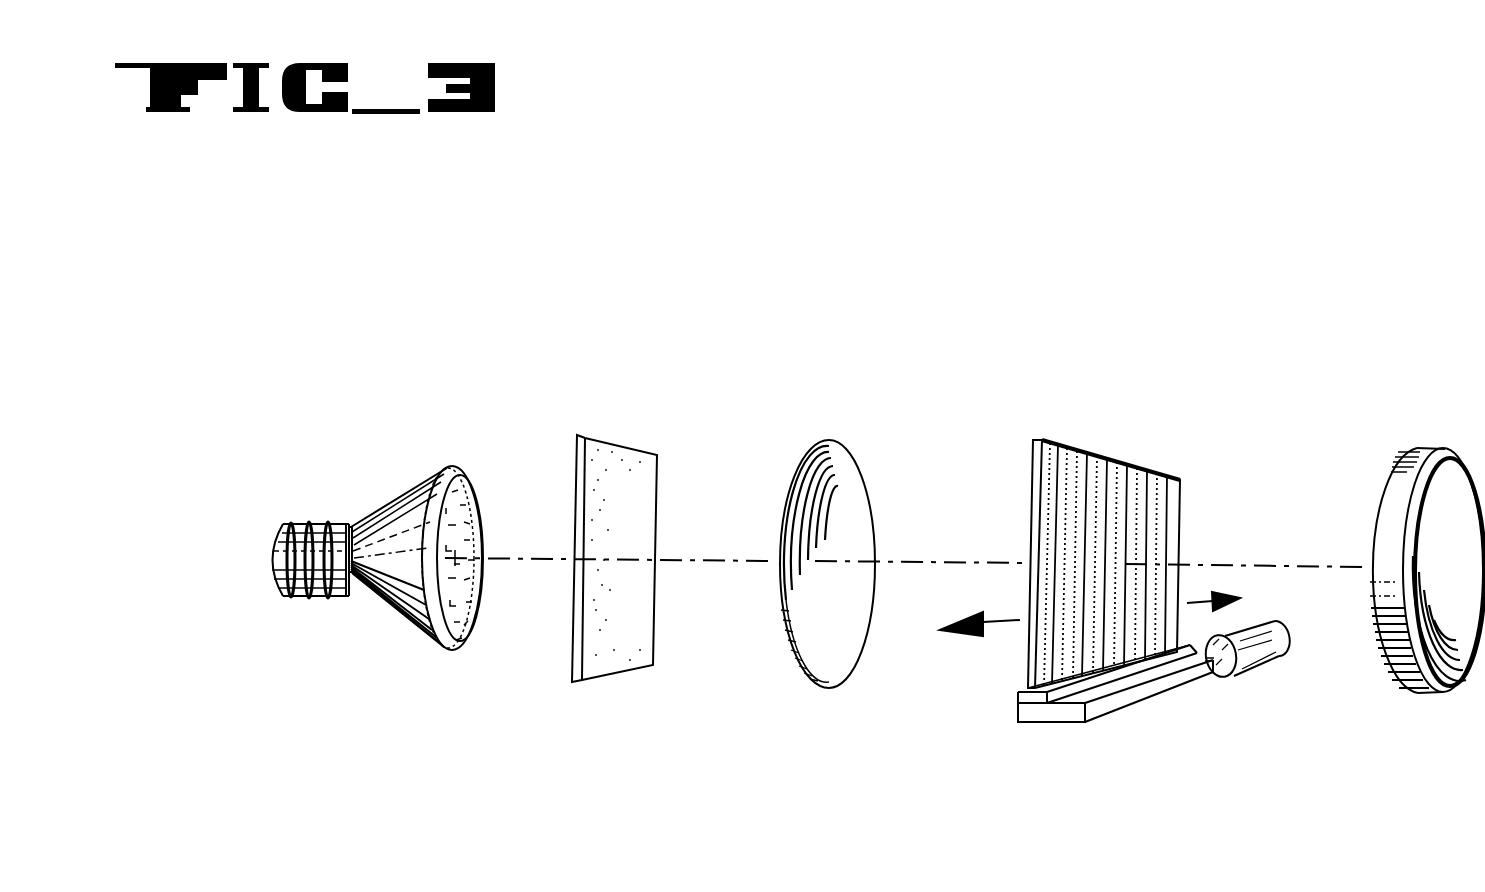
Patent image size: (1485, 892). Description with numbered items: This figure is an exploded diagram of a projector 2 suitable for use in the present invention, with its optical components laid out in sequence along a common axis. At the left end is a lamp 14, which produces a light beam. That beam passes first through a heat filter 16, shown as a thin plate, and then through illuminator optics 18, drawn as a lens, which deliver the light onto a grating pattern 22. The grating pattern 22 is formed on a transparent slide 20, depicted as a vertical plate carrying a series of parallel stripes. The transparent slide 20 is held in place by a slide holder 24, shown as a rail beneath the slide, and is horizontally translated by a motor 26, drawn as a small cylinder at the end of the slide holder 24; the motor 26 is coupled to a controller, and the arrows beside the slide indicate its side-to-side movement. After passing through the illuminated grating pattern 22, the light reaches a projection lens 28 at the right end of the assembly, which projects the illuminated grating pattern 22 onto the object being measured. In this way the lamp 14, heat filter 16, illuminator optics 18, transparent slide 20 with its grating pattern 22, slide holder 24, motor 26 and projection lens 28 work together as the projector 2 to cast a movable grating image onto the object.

The projector 2 is at (1135, 306).
The lamp 14 is at (393, 623).
The heat filter 16 is at (603, 681).
The illuminator optics 18 is at (826, 688).
The transparent slide 20 is at (1030, 462).
The grating pattern 22 is at (1127, 464).
The slide holder 24 is at (1038, 724).
The motor 26 is at (1228, 677).
The projection lens 28 is at (1413, 696).